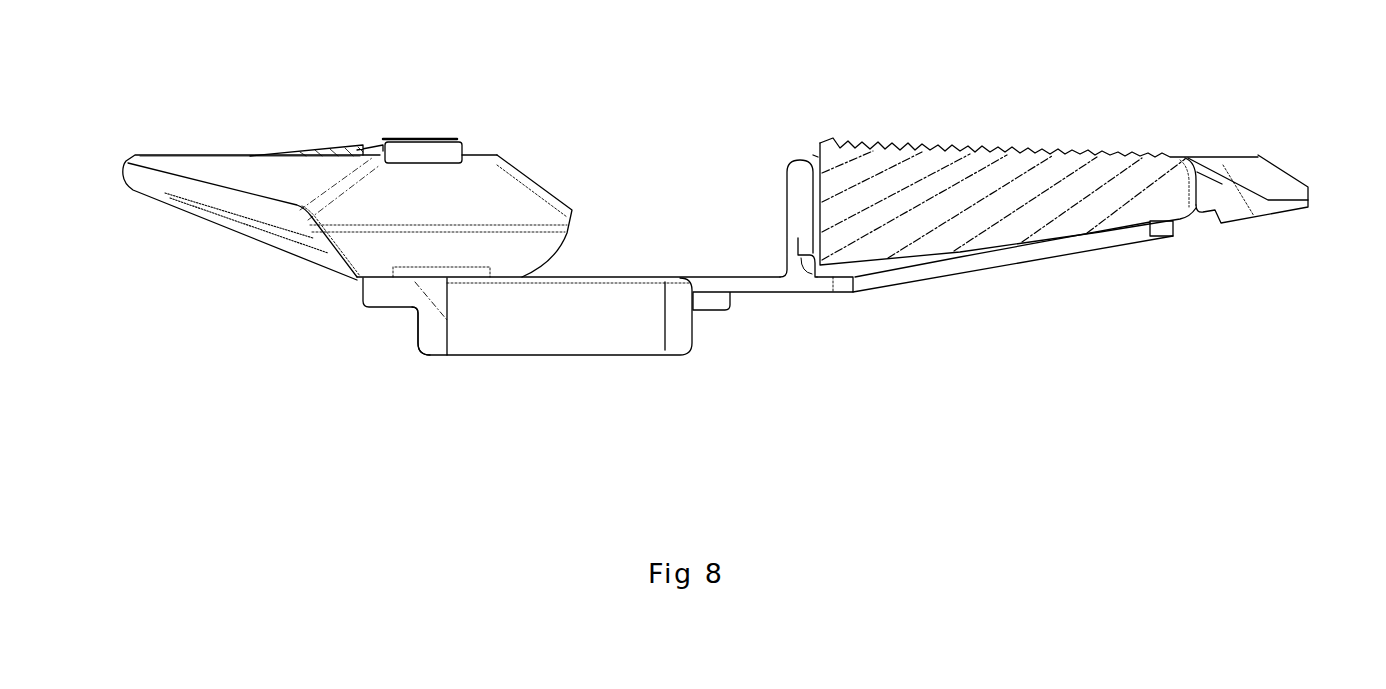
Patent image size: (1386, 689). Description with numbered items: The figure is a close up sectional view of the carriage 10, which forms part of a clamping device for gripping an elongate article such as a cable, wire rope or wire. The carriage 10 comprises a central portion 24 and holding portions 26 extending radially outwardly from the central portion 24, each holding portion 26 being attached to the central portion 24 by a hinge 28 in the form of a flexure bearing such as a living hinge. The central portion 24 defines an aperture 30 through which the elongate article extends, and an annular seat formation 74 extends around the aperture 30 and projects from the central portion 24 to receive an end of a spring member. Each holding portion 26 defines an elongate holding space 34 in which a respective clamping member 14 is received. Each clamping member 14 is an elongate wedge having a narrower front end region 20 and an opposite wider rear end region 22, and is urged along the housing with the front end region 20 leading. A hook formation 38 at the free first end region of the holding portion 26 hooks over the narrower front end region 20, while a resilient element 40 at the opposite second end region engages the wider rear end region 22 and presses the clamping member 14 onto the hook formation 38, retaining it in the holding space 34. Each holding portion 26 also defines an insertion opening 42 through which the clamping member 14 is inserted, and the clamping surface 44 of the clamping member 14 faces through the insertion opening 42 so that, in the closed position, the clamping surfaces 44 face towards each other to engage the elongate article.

The carriage 10 is at (467, 405).
The clamping member 14 is at (383, 140).
The front end region 20 is at (1190, 160).
The rear end region 22 is at (433, 145).
The central portion 24 is at (673, 322).
The holding portion 26 is at (145, 185).
The hinge 28 is at (740, 283).
The aperture 30 is at (447, 315).
The holding space 34 is at (270, 170).
The hook formation 38 is at (1217, 190).
The resilient element 40 is at (440, 200).
The insertion opening 42 is at (1162, 158).
The clamping surface 44 is at (957, 152).
The seat formation 74 is at (430, 337).